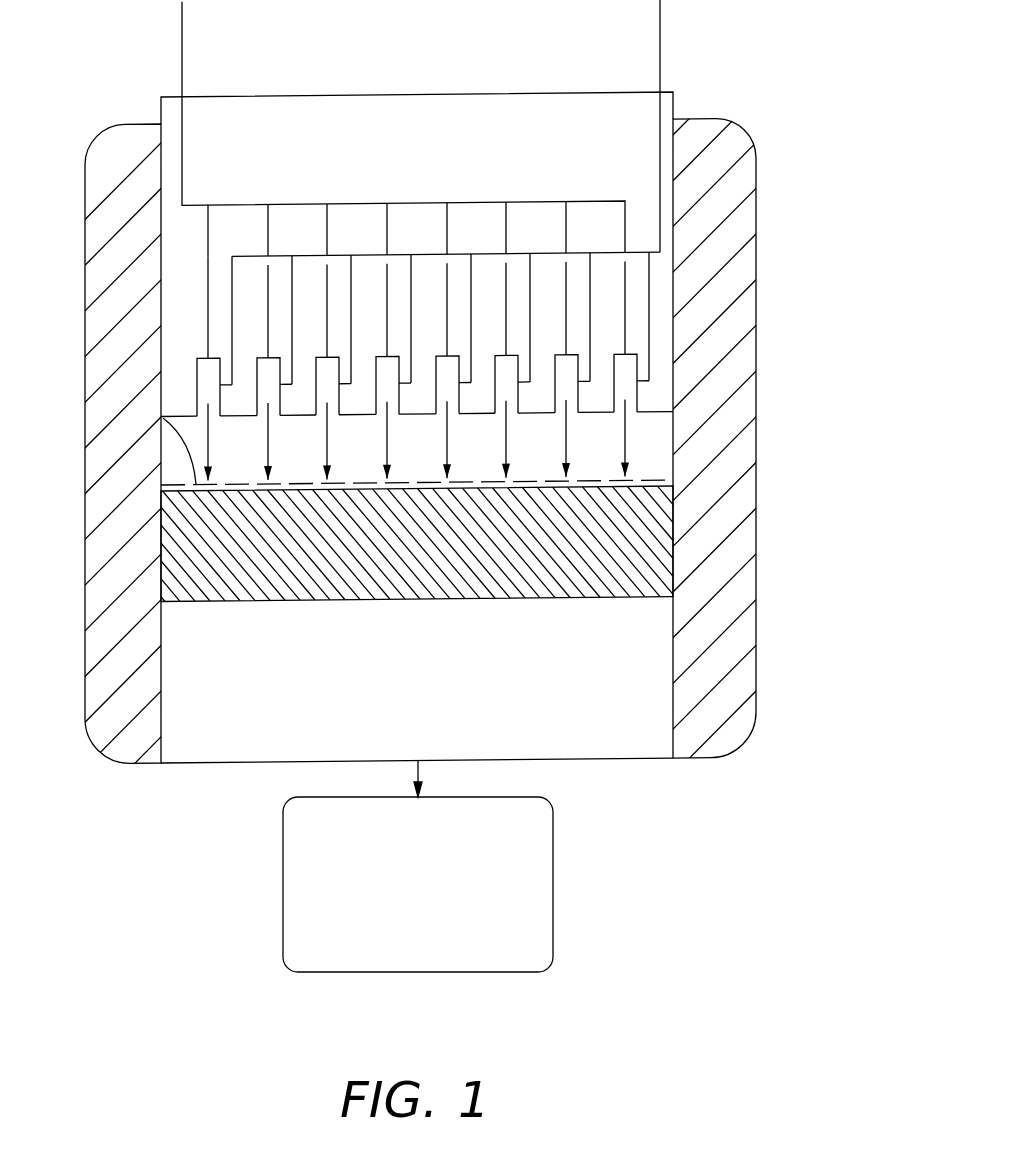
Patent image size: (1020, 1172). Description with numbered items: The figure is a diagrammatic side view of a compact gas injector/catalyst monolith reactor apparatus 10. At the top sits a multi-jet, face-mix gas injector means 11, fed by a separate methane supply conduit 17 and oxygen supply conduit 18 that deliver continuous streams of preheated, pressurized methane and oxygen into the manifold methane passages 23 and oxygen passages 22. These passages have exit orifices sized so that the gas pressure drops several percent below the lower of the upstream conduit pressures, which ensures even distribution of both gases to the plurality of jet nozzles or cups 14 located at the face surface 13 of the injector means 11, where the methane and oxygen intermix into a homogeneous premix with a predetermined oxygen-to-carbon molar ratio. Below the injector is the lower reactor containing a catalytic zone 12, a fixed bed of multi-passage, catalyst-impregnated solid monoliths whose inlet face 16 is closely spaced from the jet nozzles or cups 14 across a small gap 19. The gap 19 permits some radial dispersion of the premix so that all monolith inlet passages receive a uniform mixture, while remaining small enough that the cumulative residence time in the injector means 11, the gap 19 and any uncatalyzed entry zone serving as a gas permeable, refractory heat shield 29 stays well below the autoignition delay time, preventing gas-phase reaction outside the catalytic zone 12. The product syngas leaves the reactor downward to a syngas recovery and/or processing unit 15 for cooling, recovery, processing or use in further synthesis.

The gas injector/catalyst monolith reactor apparatus 10 is at (757, 236).
The multi-jet, face-mix gas injector means 11 is at (665, 292).
The catalytic zone 12 is at (660, 535).
The face surface 13 is at (651, 410).
The jet nozzles or cups 14 is at (637, 397).
The syngas recovery and/or processing unit 15 is at (532, 940).
The inlet face 16 is at (180, 484).
The methane supply conduit 17 is at (660, 45).
The oxygen supply conduit 18 is at (182, 42).
The gap 19 is at (652, 458).
The oxygen passages 22 is at (540, 204).
The methane passages 23 is at (232, 283).
The gas permeable, refractory heat shield 29 is at (163, 418).